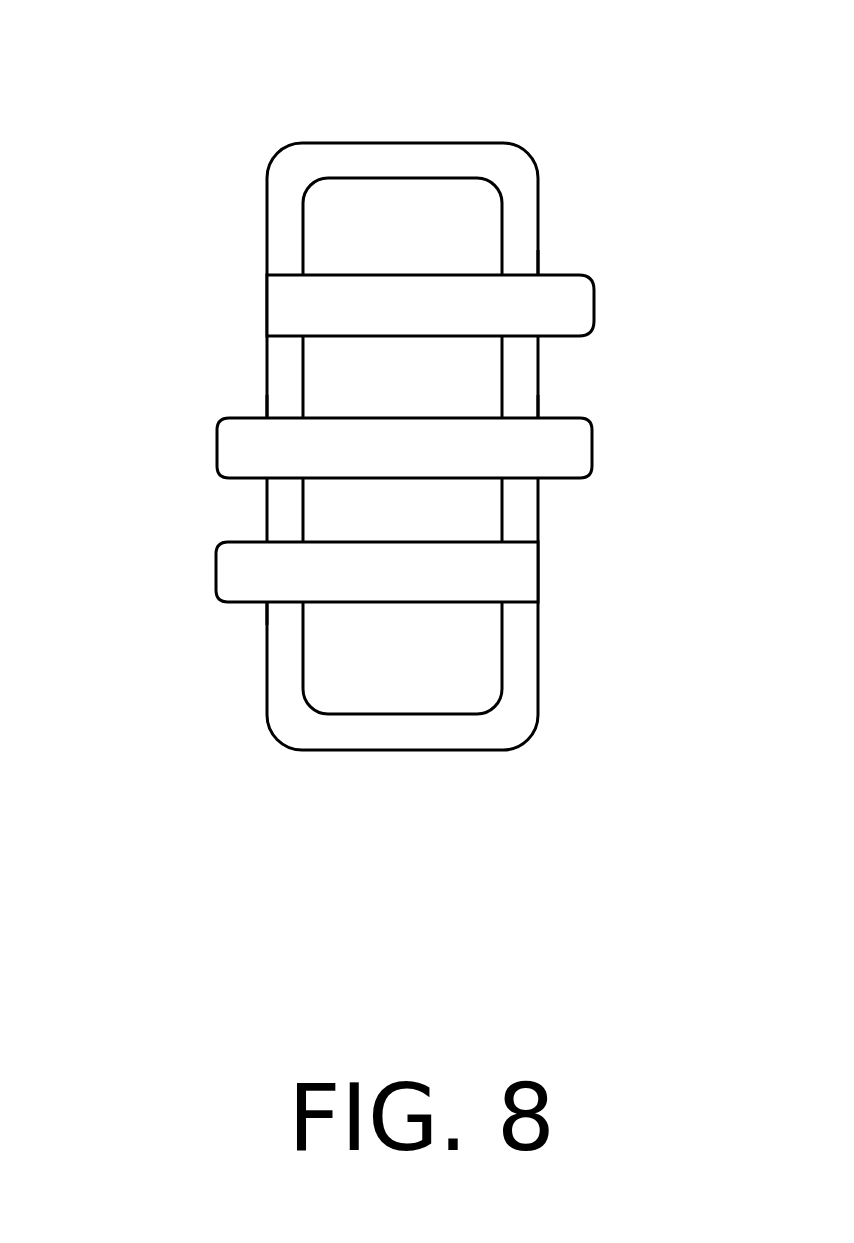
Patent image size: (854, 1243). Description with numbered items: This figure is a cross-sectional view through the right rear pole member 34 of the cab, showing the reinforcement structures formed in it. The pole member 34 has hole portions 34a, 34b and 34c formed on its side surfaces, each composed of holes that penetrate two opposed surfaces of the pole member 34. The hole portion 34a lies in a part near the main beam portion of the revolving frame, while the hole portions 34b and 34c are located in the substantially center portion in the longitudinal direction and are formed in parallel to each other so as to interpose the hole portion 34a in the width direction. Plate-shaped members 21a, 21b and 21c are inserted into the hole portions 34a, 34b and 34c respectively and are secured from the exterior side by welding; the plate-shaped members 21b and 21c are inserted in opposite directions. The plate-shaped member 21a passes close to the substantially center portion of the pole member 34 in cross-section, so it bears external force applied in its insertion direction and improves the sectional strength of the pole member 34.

The right rear pole member 34 is at (182, 168).
The hole portion 34a is at (263, 417).
The hole portion 34b is at (263, 605).
The hole portion 34c is at (545, 273).
The plate-shaped member 21a is at (238, 452).
The plate-shaped member 21b is at (235, 572).
The plate-shaped member 21c is at (573, 303).